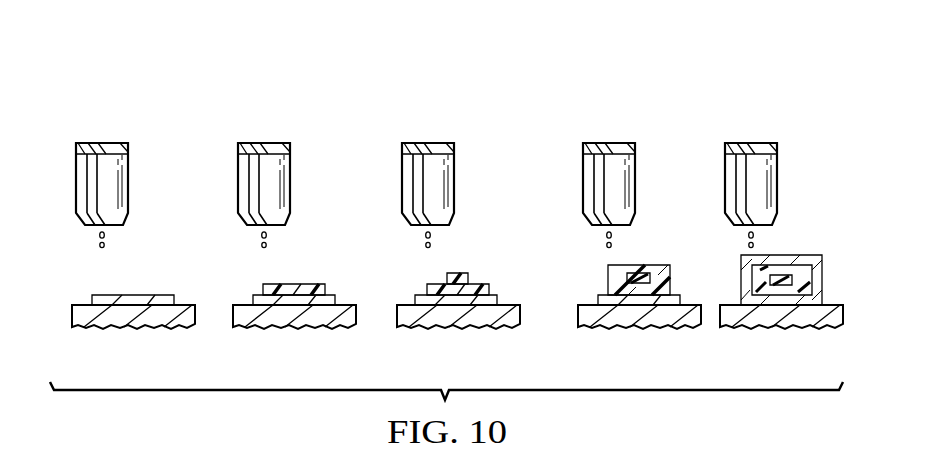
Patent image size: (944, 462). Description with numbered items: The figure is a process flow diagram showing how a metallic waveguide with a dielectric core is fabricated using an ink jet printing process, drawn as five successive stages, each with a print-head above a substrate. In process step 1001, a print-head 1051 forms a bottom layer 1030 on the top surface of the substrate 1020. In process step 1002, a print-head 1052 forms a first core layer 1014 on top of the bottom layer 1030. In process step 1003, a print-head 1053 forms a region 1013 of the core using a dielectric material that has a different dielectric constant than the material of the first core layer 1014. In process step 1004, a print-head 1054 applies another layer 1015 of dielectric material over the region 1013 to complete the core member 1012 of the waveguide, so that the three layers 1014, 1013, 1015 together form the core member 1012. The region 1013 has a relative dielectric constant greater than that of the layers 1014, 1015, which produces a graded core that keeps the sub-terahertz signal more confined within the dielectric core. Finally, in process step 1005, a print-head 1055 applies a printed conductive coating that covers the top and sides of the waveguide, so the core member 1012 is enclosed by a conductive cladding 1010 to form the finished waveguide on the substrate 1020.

The process step 1001 is at (120, 313).
The process step 1002 is at (284, 306).
The process step 1003 is at (448, 302).
The process step 1004 is at (615, 297).
The process step 1005 is at (781, 291).
The conductive cladding 1010 is at (806, 258).
The core member 1012 is at (658, 265).
The region of the core 1013 is at (460, 280).
The first core layer 1014 is at (296, 290).
The layer of dielectric material 1015 is at (600, 275).
The substrate 1020 is at (80, 315).
The bottom layer 1030 is at (133, 300).
The print-head 1051 is at (90, 134).
The print-head 1052 is at (253, 134).
The print-head 1053 is at (415, 134).
The print-head 1054 is at (620, 134).
The print-head 1055 is at (762, 134).